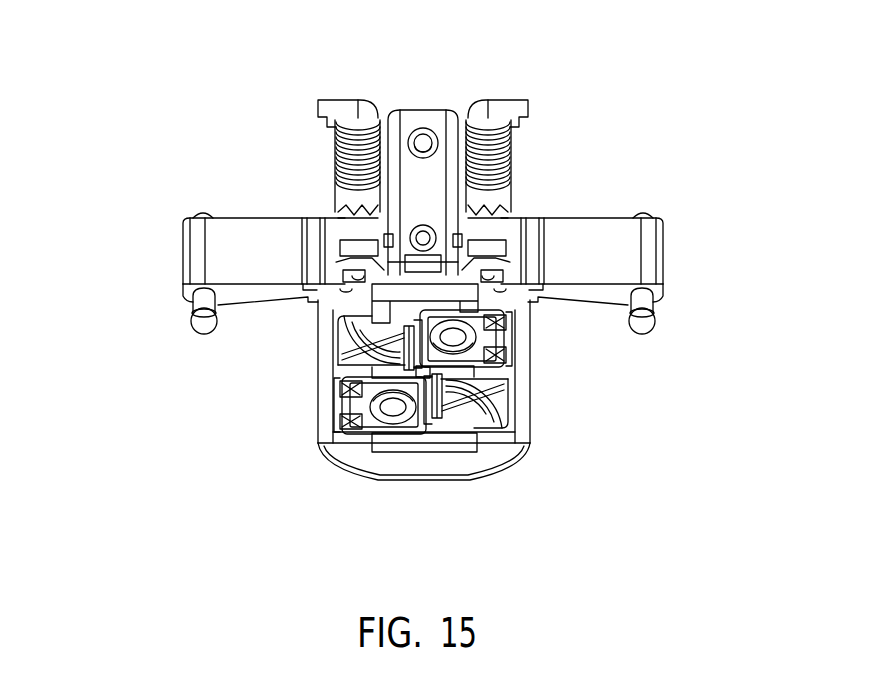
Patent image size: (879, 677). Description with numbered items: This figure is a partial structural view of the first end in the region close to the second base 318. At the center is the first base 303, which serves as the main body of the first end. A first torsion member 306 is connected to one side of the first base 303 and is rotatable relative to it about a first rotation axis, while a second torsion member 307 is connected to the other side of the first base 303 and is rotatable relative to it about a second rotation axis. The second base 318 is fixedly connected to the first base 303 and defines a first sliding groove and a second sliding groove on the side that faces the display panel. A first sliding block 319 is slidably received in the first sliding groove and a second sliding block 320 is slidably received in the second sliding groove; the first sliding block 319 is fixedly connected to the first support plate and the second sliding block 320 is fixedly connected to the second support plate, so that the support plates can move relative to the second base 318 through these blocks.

The first base 303 is at (427, 105).
The first torsion member 306 is at (666, 254).
The second torsion member 307 is at (182, 226).
The second base 318 is at (436, 481).
The first sliding block 319 is at (405, 338).
The second sliding block 320 is at (455, 428).